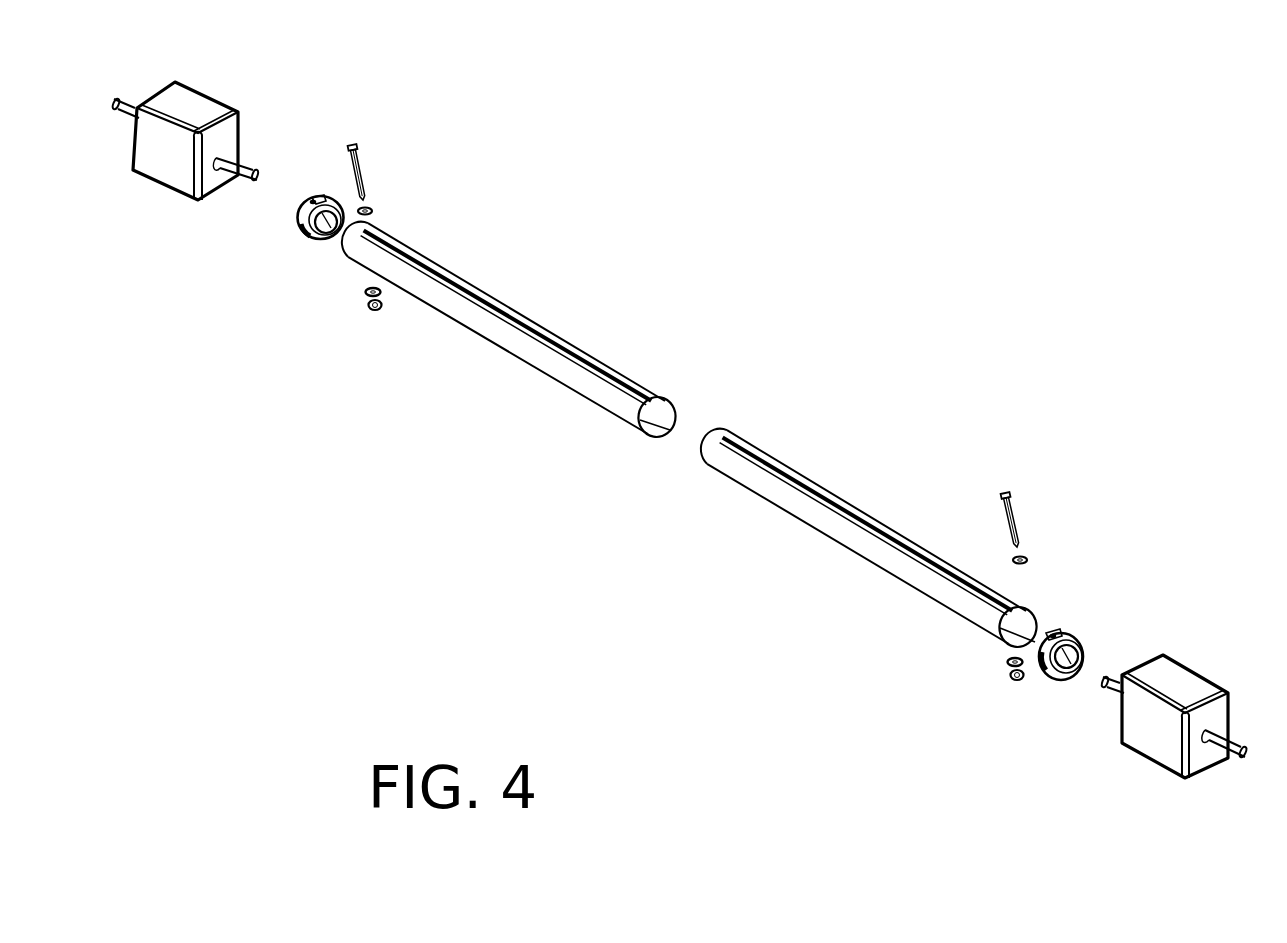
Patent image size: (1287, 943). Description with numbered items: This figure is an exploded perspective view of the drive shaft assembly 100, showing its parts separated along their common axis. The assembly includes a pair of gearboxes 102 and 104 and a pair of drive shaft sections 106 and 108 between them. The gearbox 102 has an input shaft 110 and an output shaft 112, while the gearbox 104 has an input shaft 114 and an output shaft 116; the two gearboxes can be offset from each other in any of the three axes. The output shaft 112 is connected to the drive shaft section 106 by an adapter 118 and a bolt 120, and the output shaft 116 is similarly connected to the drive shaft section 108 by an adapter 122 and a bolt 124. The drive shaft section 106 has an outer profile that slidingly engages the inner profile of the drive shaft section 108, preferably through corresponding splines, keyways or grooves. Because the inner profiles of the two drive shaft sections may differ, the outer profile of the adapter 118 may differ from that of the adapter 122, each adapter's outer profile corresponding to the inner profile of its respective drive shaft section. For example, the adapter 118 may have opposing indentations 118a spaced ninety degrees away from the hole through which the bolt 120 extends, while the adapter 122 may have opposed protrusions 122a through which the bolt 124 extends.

The drive shaft assembly 100 is at (908, 142).
The gearbox 102 is at (183, 92).
The gearbox 104 is at (1202, 685).
The drive shaft section 106 is at (520, 313).
The drive shaft section 108 is at (765, 455).
The input shaft 110 is at (123, 110).
The output shaft 112 is at (250, 163).
The input shaft 114 is at (1232, 753).
The output shaft 116 is at (1107, 677).
The adapter 118 is at (274, 257).
The opposing indentations 118a is at (295, 222).
The bolt 120 is at (362, 173).
The adapter 122 is at (1067, 654).
The opposed protrusions 122a is at (1058, 632).
The bolt 124 is at (1015, 502).